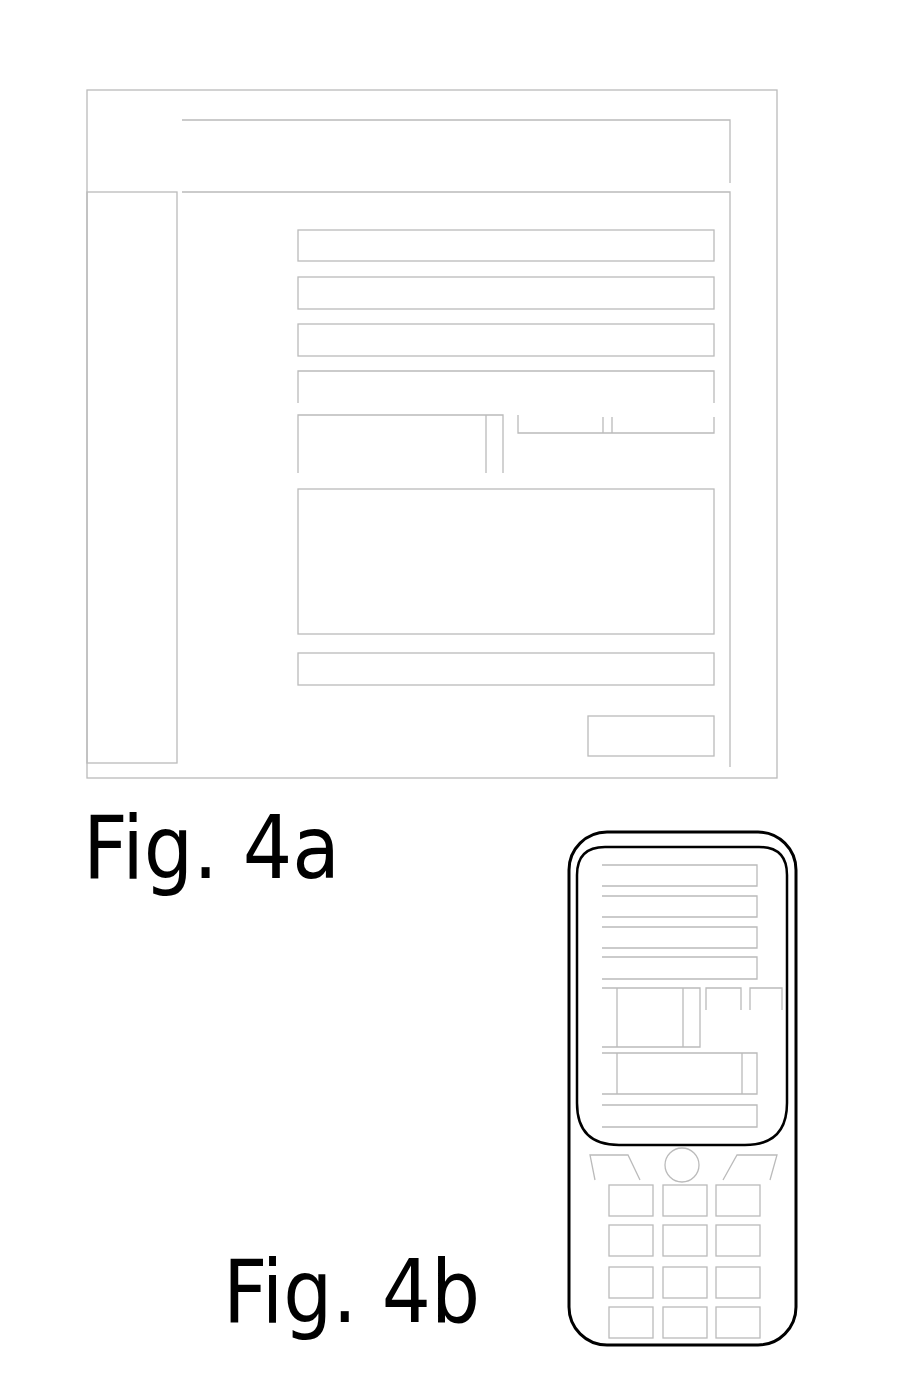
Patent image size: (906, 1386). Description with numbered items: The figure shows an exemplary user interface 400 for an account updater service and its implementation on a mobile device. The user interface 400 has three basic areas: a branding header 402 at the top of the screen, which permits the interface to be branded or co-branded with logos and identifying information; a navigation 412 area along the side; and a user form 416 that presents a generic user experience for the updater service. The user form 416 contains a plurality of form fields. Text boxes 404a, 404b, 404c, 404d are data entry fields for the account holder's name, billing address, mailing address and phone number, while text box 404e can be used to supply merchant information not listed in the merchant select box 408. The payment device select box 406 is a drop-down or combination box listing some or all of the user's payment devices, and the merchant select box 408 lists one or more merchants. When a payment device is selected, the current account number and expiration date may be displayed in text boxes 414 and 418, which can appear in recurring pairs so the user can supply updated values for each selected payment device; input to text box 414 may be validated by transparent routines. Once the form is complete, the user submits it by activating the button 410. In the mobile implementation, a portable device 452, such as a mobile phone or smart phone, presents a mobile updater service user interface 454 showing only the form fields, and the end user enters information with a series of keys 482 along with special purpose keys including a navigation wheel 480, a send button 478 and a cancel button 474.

In FIG. 4a, the user interface 400 is at (705, 60).
In FIG. 4a, the branding header 402 is at (181, 150).
In FIG. 4a, the text box 404a is at (297, 243).
In FIG. 4b, the text box 404a is at (758, 871).
In FIG. 4a, the text box 404b is at (297, 291).
In FIG. 4b, the text box 404b is at (758, 902).
In FIG. 4a, the text box 404c is at (297, 339).
In FIG. 4b, the text box 404c is at (758, 933).
In FIG. 4a, the text box 404d is at (297, 386).
In FIG. 4b, the text box 404d is at (758, 964).
In FIG. 4a, the text box 404e is at (297, 667).
In FIG. 4b, the text box 404e is at (758, 1116).
In FIG. 4a, the payment device select box 406 is at (297, 440).
In FIG. 4b, the payment device select box 406 is at (601, 1017).
In FIG. 4a, the merchant select box 408 is at (297, 559).
In FIG. 4b, the merchant select box 408 is at (758, 1073).
In FIG. 4a, the button 410 is at (587, 732).
In FIG. 4a, the navigation 412 is at (133, 190).
In FIG. 4a, the text box 414 is at (604, 431).
In FIG. 4b, the text box 414 is at (724, 1011).
In FIG. 4a, the user form 416 is at (731, 246).
In FIG. 4a, the text box 418 is at (716, 430).
In FIG. 4b, the text box 418 is at (782, 998).
In FIG. 4b, the portable device 452 is at (683, 828).
In FIG. 4b, the mobile updater service user interface 454 is at (636, 845).
In FIG. 4b, the cancel button 474 is at (776, 1166).
In FIG. 4b, the send button 478 is at (588, 1166).
In FIG. 4b, the navigation wheel 480 is at (682, 1165).
In FIG. 4b, the keys 482 is at (609, 1236).